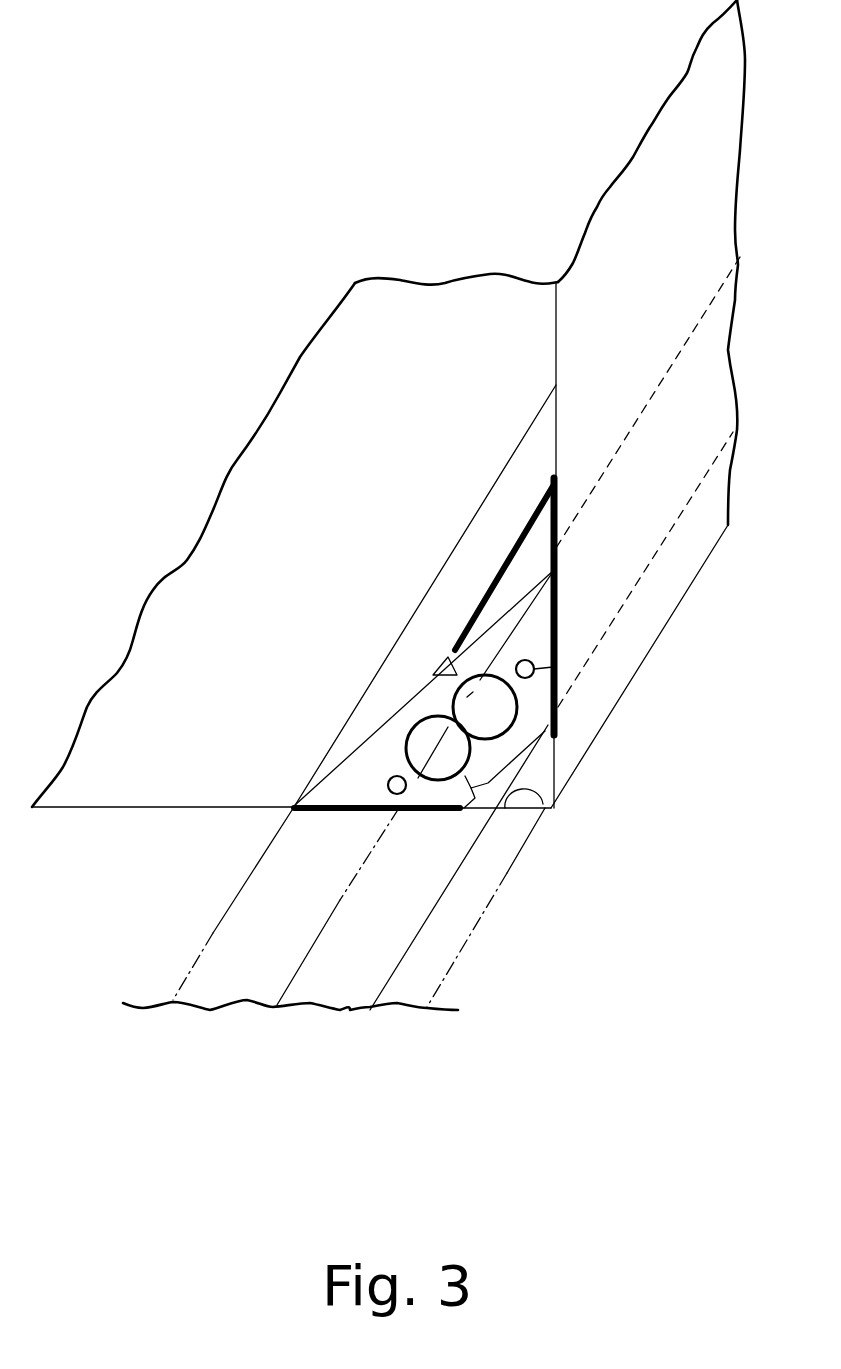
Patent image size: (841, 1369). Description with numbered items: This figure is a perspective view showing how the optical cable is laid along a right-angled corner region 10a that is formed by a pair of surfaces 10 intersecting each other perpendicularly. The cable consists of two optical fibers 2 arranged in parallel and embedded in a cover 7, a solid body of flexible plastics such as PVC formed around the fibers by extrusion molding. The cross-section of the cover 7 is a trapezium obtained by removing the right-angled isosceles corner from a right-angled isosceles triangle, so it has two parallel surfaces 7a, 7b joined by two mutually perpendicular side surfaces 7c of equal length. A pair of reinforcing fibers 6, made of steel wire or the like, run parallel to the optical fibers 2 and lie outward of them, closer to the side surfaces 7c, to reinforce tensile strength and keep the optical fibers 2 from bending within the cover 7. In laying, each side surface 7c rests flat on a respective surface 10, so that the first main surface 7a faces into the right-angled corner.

The surfaces 10 is at (665, 193).
The right-angled corner region 10a is at (503, 823).
The cover 7 is at (338, 787).
The first main surface 7a is at (470, 813).
The second parallel surface 7b is at (430, 622).
The side surfaces 7c is at (323, 808).
The reinforcing fibers 6 is at (393, 776).
The optical fibers 2 is at (470, 758).